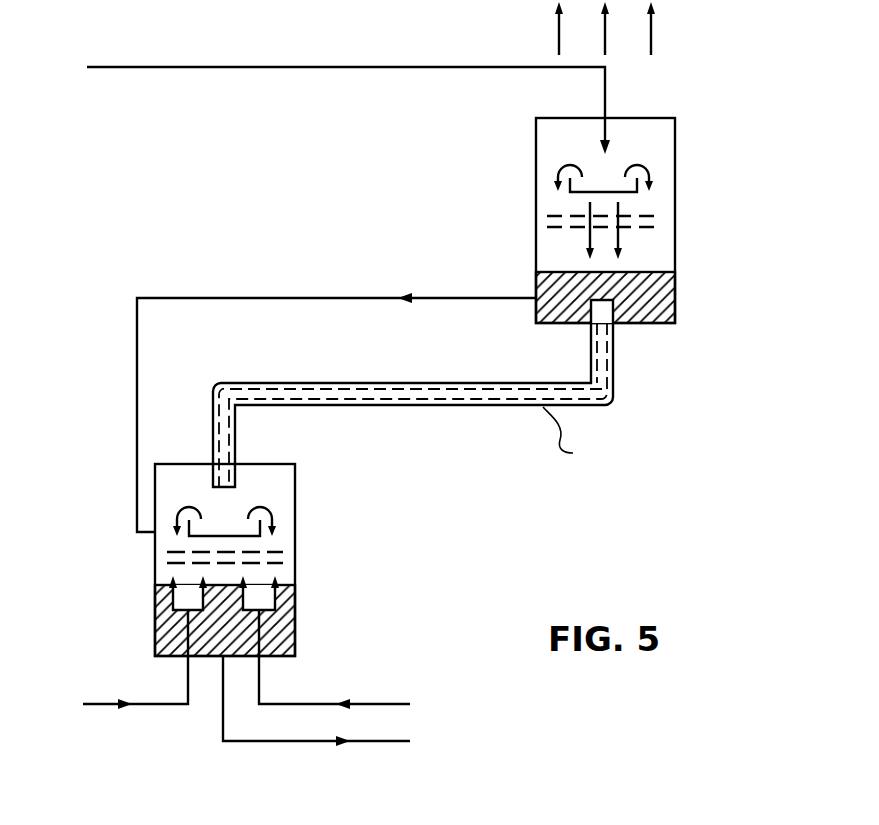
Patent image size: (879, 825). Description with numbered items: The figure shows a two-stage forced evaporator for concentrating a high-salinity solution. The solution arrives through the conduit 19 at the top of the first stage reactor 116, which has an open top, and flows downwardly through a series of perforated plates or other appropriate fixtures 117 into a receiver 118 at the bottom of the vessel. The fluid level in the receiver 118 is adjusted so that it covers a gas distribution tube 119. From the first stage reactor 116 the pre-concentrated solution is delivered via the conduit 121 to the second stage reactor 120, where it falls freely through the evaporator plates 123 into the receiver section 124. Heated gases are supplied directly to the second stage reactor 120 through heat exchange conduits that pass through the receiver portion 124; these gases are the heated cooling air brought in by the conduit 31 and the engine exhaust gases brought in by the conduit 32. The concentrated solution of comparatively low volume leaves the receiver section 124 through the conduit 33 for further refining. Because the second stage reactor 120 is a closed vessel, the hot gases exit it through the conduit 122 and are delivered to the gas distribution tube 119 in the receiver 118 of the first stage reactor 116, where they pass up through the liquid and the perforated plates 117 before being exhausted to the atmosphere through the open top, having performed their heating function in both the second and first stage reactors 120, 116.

The conduit 19 is at (237, 66).
The first stage reactor 116 is at (675, 148).
The perforated plates 117 is at (557, 213).
The receiver 118 is at (665, 287).
The gas distribution tube 119 is at (607, 312).
The second stage reactor 120 is at (296, 503).
The conduit 121 is at (278, 297).
The conduit 122 is at (372, 382).
The evaporator plates 123 is at (175, 553).
The receiver section 124 is at (283, 620).
The conduit 31 is at (170, 703).
The conduit 32 is at (405, 703).
The conduit 33 is at (406, 742).